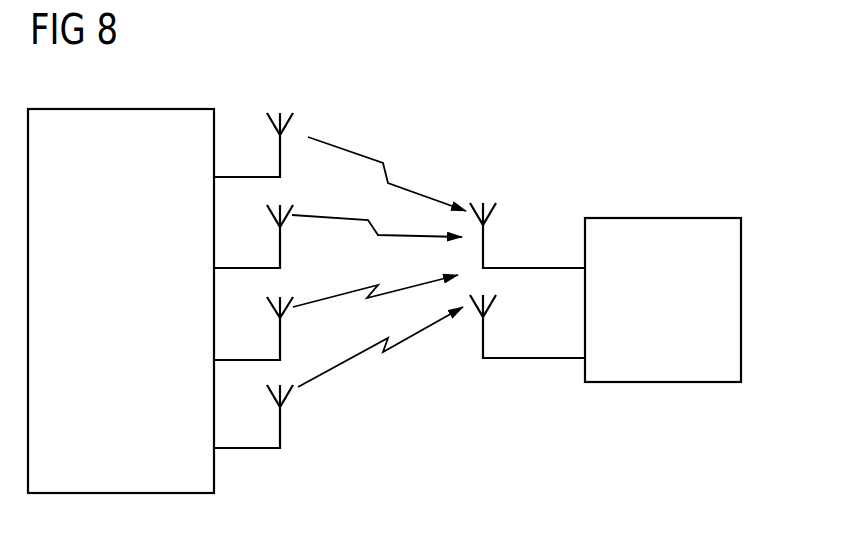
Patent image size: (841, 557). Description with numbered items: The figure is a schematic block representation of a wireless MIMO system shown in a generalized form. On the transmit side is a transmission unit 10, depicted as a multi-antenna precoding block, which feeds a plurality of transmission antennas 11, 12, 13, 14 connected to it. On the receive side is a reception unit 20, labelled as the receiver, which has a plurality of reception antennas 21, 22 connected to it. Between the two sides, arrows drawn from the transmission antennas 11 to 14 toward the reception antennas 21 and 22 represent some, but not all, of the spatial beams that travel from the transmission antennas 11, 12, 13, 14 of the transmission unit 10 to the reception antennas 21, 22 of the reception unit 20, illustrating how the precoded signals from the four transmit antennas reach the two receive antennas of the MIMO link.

The transmission unit 10 is at (174, 108).
The transmission antenna 11 is at (280, 162).
The transmission antenna 12 is at (280, 252).
The transmission antenna 13 is at (280, 338).
The transmission antenna 14 is at (280, 430).
The reception unit 20 is at (661, 217).
The reception antenna 21 is at (483, 237).
The reception antenna 22 is at (483, 327).